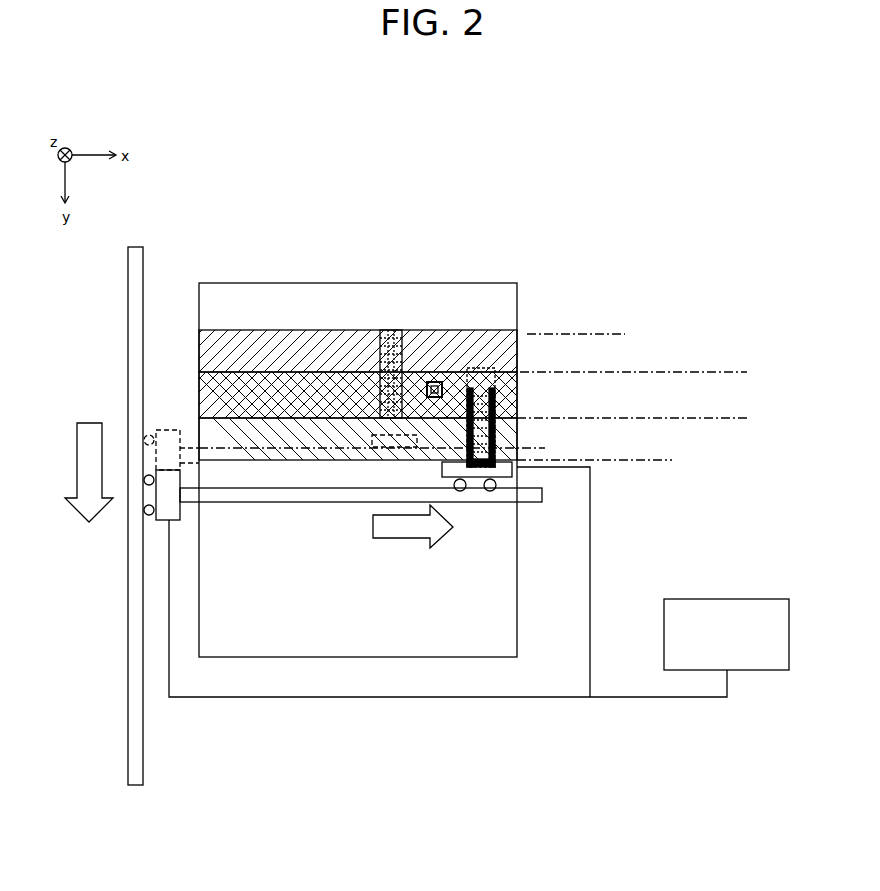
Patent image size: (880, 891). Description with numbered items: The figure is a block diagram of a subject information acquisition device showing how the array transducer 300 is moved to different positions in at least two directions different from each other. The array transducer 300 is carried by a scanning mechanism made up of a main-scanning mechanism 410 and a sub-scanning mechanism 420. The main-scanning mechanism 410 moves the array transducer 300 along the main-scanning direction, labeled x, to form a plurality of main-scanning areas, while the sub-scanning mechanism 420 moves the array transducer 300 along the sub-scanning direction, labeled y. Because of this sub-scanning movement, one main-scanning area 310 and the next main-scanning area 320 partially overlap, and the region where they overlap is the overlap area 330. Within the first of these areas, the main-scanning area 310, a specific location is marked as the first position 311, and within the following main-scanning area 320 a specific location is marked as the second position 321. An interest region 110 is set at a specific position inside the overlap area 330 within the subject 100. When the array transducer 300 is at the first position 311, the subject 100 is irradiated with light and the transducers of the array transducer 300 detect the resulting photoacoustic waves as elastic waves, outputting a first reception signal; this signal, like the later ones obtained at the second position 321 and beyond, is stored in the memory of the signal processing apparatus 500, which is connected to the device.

The subject 100 is at (407, 643).
The interest region 110 is at (437, 381).
The array transducer 300 is at (367, 331).
The i-th main-scanning area 310 is at (630, 418).
The first position 311 is at (388, 328).
The i+1-th main-scanning area 320 is at (674, 372).
The second position 321 is at (490, 417).
The overlap area 330 is at (751, 372).
The main-scanning mechanism 410 is at (480, 478).
The sub-scanning mechanism 420 is at (156, 522).
The signal processing apparatus 500 is at (770, 598).